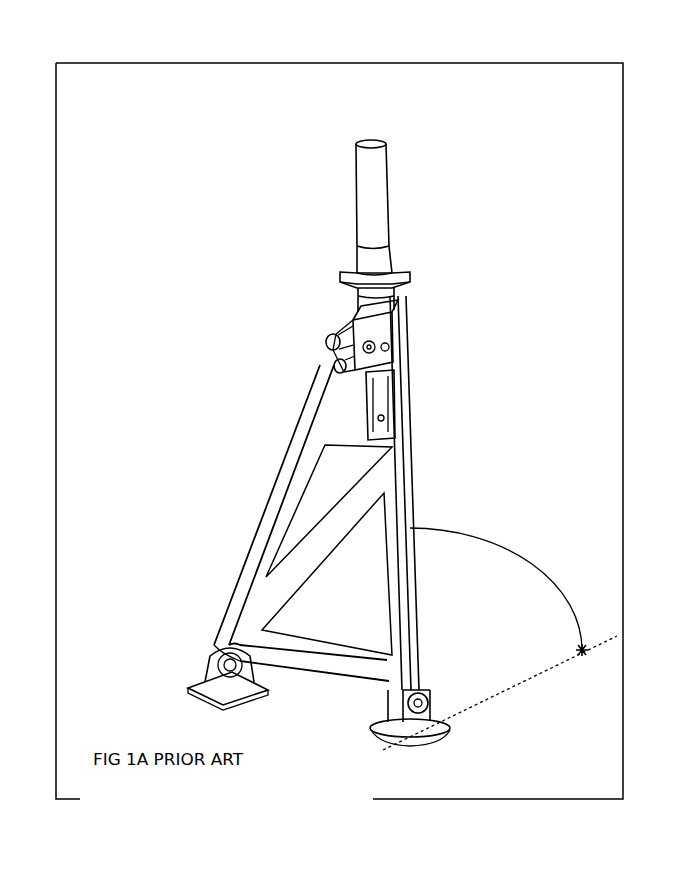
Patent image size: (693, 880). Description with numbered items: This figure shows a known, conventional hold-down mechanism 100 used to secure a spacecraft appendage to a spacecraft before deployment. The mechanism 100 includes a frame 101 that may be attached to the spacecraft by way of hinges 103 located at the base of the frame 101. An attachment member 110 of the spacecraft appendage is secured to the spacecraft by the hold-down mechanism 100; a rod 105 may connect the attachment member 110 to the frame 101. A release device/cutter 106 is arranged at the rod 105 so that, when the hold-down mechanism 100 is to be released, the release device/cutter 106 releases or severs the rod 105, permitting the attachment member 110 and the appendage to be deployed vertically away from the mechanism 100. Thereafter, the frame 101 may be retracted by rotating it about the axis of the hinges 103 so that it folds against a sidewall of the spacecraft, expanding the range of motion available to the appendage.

The hold-down mechanism 100 is at (226, 237).
The frame 101 is at (296, 445).
The hinges 103 is at (190, 687).
The rod 105 is at (400, 409).
The release device/cutter 106 is at (332, 352).
The attachment member 110 is at (377, 207).